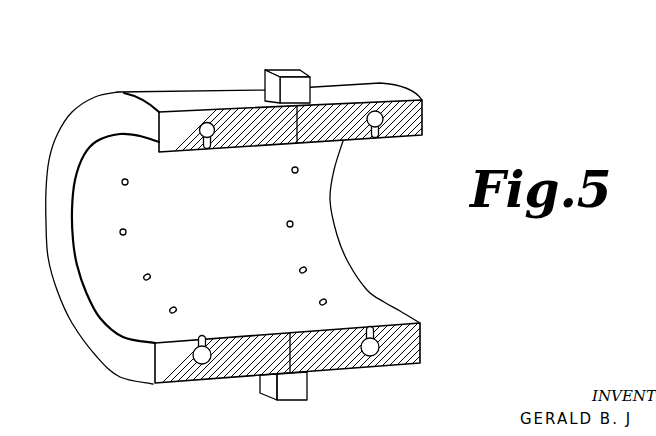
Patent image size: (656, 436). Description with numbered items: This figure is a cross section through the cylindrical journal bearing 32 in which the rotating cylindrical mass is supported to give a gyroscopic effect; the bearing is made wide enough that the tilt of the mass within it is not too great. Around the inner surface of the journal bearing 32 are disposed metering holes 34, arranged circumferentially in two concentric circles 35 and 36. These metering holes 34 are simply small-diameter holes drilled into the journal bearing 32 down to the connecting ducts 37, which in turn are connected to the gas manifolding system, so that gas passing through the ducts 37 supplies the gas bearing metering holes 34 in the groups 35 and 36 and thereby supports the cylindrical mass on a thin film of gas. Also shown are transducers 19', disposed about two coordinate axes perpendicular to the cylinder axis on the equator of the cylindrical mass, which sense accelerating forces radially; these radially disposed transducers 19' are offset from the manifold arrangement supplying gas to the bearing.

The transducers 19' is at (287, 231).
The journal bearing 32 is at (398, 91).
The metering holes 34 is at (128, 184).
The concentric circle 35 is at (297, 220).
The concentric circle 36 is at (117, 242).
The connecting ducts 37 is at (207, 122).